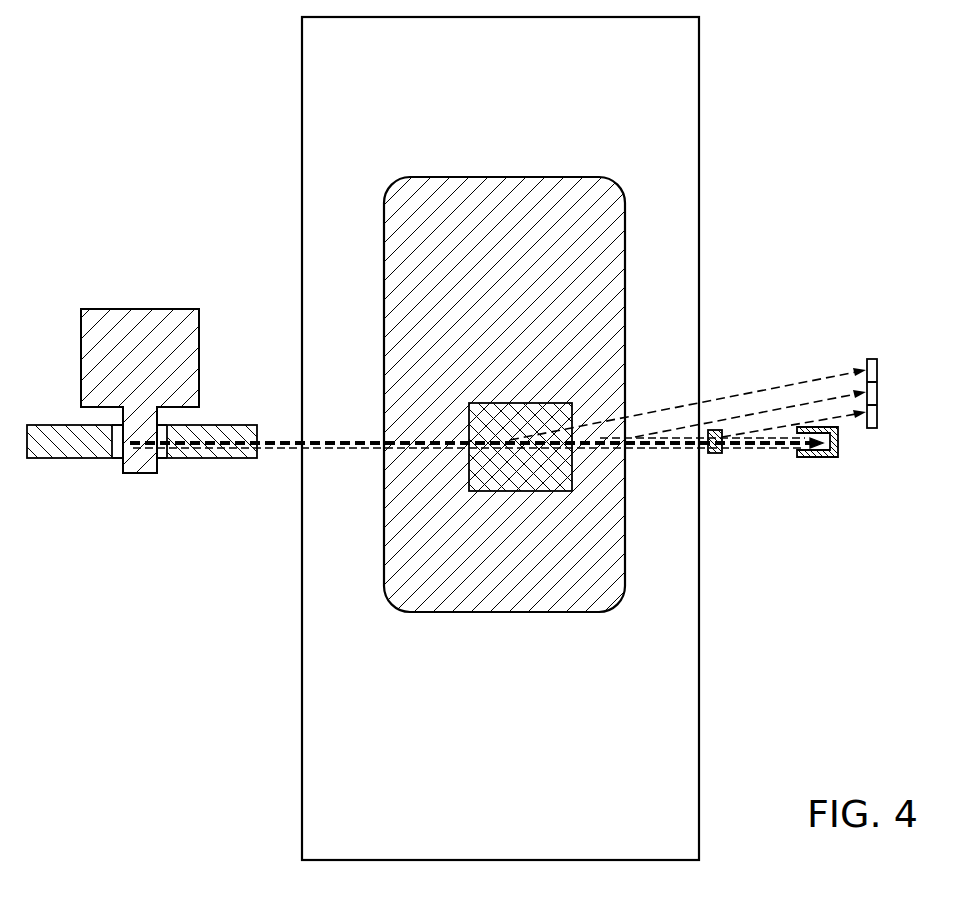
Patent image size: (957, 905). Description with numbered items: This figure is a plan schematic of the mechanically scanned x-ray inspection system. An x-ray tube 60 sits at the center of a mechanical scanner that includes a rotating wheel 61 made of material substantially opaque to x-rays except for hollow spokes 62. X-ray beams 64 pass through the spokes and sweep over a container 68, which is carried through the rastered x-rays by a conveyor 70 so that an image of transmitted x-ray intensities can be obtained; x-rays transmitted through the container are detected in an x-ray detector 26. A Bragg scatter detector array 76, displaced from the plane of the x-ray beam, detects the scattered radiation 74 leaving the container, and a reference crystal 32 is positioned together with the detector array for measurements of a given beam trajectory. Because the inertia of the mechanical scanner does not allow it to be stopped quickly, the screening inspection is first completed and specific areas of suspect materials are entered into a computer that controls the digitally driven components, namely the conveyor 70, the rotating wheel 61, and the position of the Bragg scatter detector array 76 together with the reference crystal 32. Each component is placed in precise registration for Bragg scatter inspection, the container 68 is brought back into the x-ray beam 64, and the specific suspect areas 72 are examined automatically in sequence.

The x-ray detector 26 is at (821, 458).
The reference crystal 32 is at (722, 453).
The x-ray tube 60 is at (118, 309).
The rotating wheel 61 is at (65, 460).
The hollow spokes 62 is at (200, 460).
The x-ray beam 64 is at (280, 456).
The container 68 is at (616, 183).
The conveyor 70 is at (302, 555).
The suspect areas 72 is at (571, 492).
The scattered radiation 74 is at (779, 386).
The Bragg scatter detector array 76 is at (874, 359).